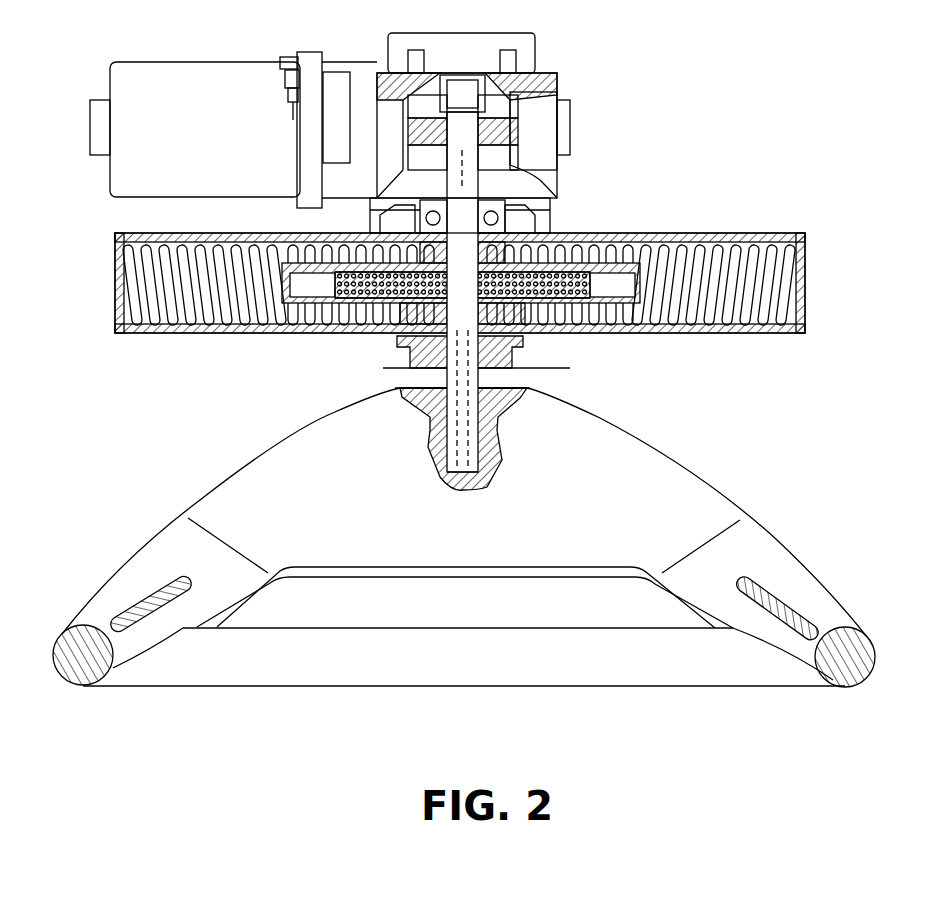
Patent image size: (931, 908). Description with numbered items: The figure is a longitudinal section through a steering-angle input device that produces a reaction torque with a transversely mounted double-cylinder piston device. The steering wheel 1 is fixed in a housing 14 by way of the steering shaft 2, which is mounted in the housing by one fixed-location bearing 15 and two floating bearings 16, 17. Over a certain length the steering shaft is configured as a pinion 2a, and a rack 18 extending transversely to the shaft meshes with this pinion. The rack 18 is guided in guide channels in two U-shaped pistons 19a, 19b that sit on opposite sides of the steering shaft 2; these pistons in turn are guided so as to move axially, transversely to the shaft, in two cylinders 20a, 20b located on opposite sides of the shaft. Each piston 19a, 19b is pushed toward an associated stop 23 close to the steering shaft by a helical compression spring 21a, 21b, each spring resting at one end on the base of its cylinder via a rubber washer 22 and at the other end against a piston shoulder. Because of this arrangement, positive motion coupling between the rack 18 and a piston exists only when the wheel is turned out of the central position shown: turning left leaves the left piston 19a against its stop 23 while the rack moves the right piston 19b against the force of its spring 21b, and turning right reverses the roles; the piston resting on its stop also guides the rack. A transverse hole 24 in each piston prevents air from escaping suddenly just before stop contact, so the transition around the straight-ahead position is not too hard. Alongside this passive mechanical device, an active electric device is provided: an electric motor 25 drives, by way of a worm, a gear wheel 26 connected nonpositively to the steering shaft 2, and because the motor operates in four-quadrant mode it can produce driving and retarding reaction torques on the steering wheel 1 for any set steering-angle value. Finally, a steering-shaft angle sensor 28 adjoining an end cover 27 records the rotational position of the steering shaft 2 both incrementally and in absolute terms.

The steering wheel 1 is at (683, 508).
The steering shaft 2 is at (468, 403).
The pinion 2a is at (560, 238).
The housing 14 is at (512, 377).
The fixed-location bearing 15 is at (525, 225).
The floating bearing 16 is at (560, 98).
The floating bearing 17 is at (512, 352).
The rack 18 is at (640, 248).
The U-shaped piston 19a is at (300, 343).
The U-shaped piston 19b is at (623, 325).
The cylinder 20a is at (120, 323).
The cylinder 20b is at (760, 333).
The helical compression spring 21a is at (153, 337).
The helical compression spring 21b is at (753, 253).
The rubber washer 22 is at (118, 247).
The stop 23 is at (422, 352).
The transverse hole 24 is at (285, 242).
The electric motor 25 is at (333, 87).
The gear wheel 26 is at (515, 132).
The end cover 27 is at (517, 78).
The steering-shaft angle sensor 28 is at (515, 43).